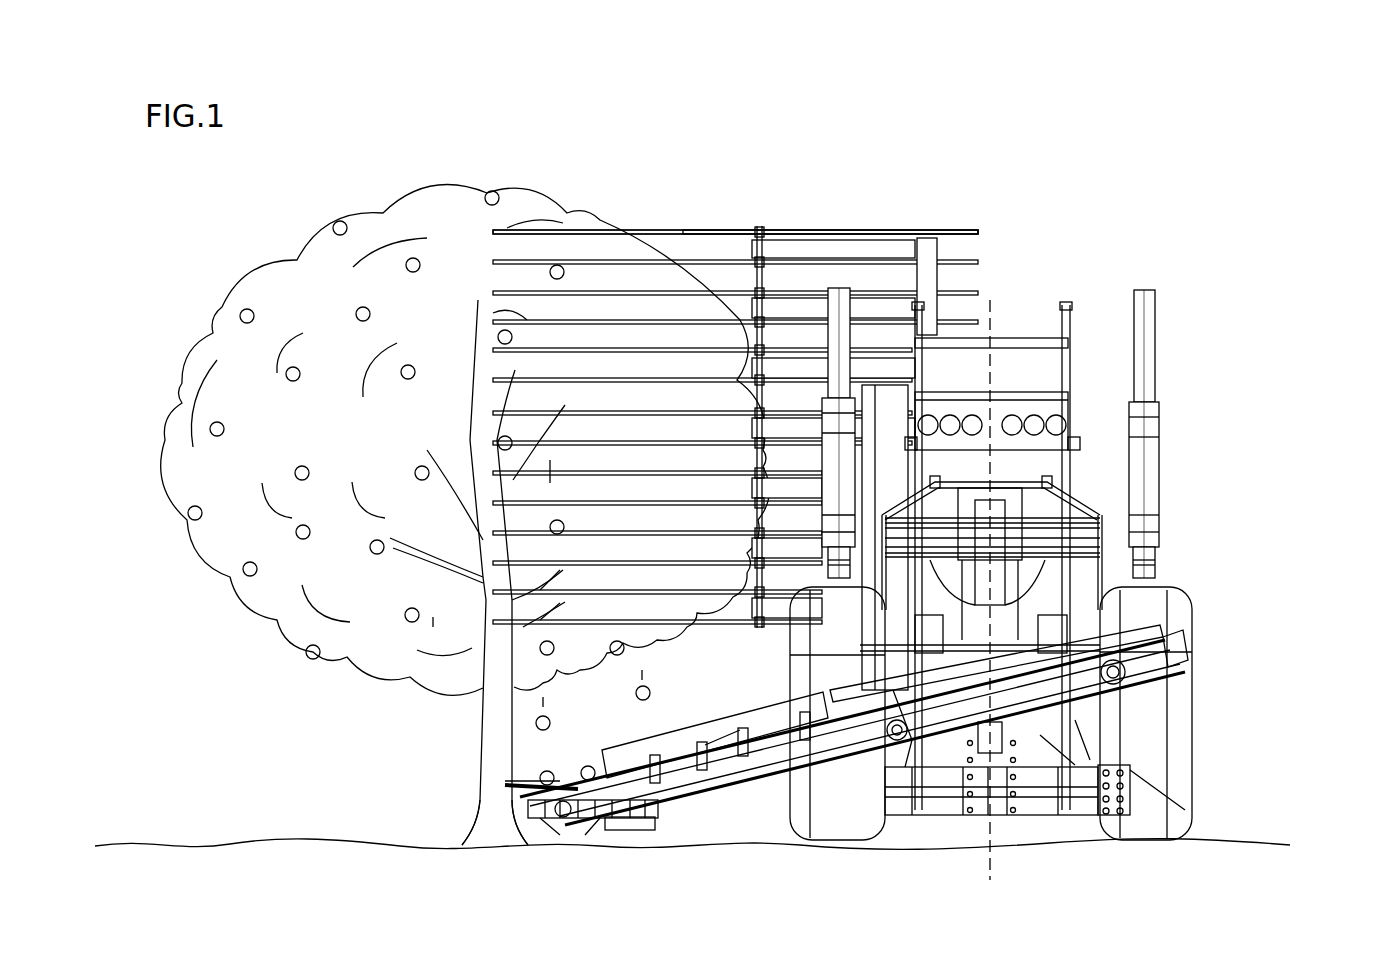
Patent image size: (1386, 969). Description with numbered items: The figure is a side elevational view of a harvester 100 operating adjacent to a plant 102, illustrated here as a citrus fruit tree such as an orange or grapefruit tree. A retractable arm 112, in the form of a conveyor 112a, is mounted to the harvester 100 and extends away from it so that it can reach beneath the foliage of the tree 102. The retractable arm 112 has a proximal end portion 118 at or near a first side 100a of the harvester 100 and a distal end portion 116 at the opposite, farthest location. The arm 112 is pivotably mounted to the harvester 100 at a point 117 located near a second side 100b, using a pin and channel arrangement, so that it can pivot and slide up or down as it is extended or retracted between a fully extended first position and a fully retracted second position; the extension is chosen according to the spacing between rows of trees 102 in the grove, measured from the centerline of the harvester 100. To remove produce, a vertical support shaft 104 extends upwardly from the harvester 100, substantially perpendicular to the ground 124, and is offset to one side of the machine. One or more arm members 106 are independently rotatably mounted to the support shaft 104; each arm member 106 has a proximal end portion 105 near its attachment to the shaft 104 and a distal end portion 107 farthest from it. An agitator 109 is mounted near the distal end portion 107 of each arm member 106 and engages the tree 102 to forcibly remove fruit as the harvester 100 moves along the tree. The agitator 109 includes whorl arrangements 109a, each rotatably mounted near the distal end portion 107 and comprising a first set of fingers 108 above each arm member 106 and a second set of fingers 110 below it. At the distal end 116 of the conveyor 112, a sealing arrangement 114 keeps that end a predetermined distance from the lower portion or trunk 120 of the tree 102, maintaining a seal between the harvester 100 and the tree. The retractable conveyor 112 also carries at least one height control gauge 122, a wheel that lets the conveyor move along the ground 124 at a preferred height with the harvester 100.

The harvester 100 is at (1002, 528).
The first side of the harvester 100a is at (1188, 428).
The second side of the harvester 100b is at (790, 640).
The plant 102 is at (215, 278).
The vertical support shaft 104 is at (927, 278).
The proximal end portion of arm member 105 is at (913, 250).
The arm member 106 is at (847, 248).
The distal end portion of arm member 107 is at (683, 231).
The first set of fingers 108 is at (653, 231).
The agitator 109 is at (673, 345).
The whorl arrangement 109a is at (632, 215).
The second set of fingers 110 is at (763, 258).
The retractable arm 112 is at (835, 770).
The conveyor 112a is at (713, 782).
The sealing arrangement 114 is at (497, 822).
The distal end portion of retractable arm 116 is at (598, 792).
The pivot point 117 is at (897, 742).
The proximal end portion of retractable arm 118 is at (1163, 668).
The tree trunk 120 is at (490, 777).
The height control gauge 122 is at (624, 830).
The ground 124 is at (265, 899).